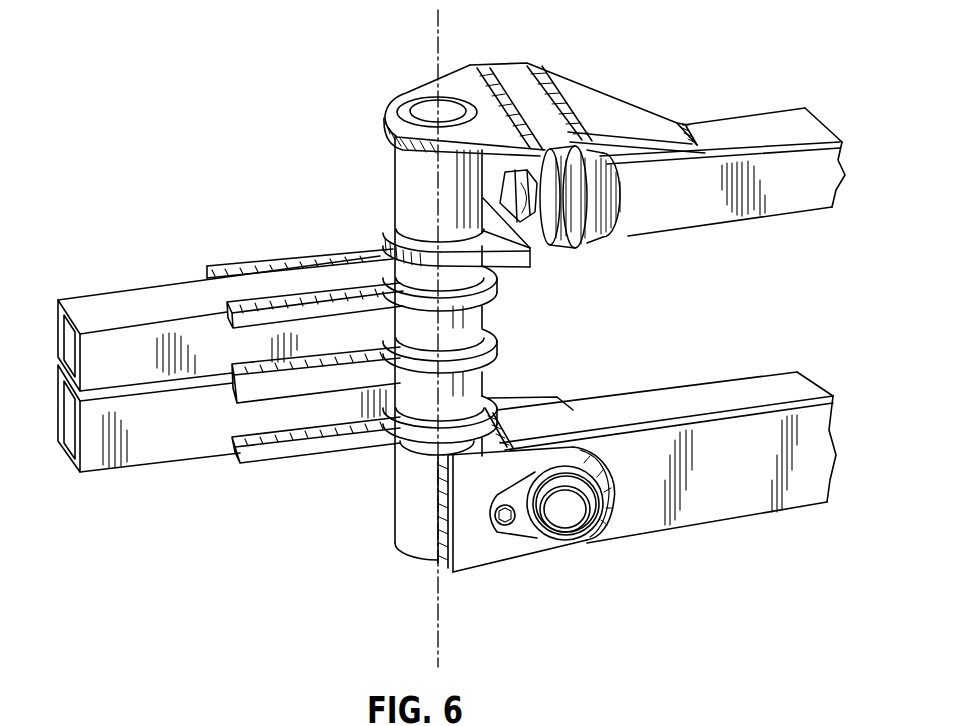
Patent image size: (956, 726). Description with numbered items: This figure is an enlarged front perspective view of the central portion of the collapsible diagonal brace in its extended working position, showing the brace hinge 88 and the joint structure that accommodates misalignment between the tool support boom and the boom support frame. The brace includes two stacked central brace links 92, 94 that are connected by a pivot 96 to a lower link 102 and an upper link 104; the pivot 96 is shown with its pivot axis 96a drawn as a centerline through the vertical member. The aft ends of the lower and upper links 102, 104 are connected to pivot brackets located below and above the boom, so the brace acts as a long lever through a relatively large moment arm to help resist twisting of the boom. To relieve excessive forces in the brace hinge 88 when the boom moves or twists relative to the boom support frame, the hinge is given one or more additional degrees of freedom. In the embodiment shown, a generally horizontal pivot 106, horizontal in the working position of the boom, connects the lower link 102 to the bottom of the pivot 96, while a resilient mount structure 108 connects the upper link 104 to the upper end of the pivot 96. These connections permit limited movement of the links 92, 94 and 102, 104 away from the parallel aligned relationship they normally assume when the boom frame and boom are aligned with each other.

The brace hinge 88 is at (400, 58).
The central brace link 92 is at (177, 440).
The central brace link 94 is at (155, 297).
The pivot 96 is at (393, 200).
The pivot axis 96a is at (437, 593).
The lower link 102 is at (700, 395).
The upper link 104 is at (738, 123).
The horizontal pivot 106 is at (568, 512).
The resilient mount structure 108 is at (523, 66).